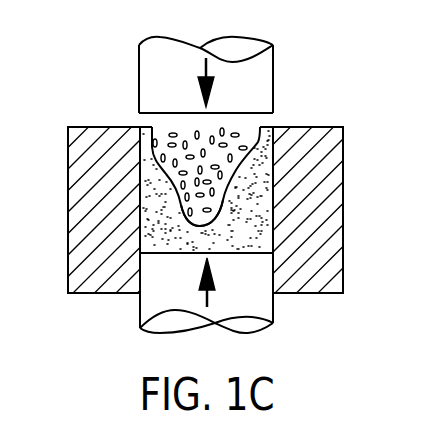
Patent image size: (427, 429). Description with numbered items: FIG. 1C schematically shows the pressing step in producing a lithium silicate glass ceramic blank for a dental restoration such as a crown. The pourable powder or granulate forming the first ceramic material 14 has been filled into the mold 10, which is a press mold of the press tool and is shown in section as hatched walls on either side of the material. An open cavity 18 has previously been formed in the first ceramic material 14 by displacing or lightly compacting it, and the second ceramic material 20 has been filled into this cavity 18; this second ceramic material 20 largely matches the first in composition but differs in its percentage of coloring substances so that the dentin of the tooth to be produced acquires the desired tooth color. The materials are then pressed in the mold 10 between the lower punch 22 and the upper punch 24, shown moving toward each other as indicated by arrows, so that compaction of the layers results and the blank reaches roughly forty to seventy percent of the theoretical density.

The mold 10 is at (273, 158).
The first ceramic material 14 is at (157, 235).
The open cavity 18 is at (220, 204).
The second ceramic material 20 is at (208, 160).
The lower punch 22 is at (250, 317).
The upper punch 24 is at (255, 63).